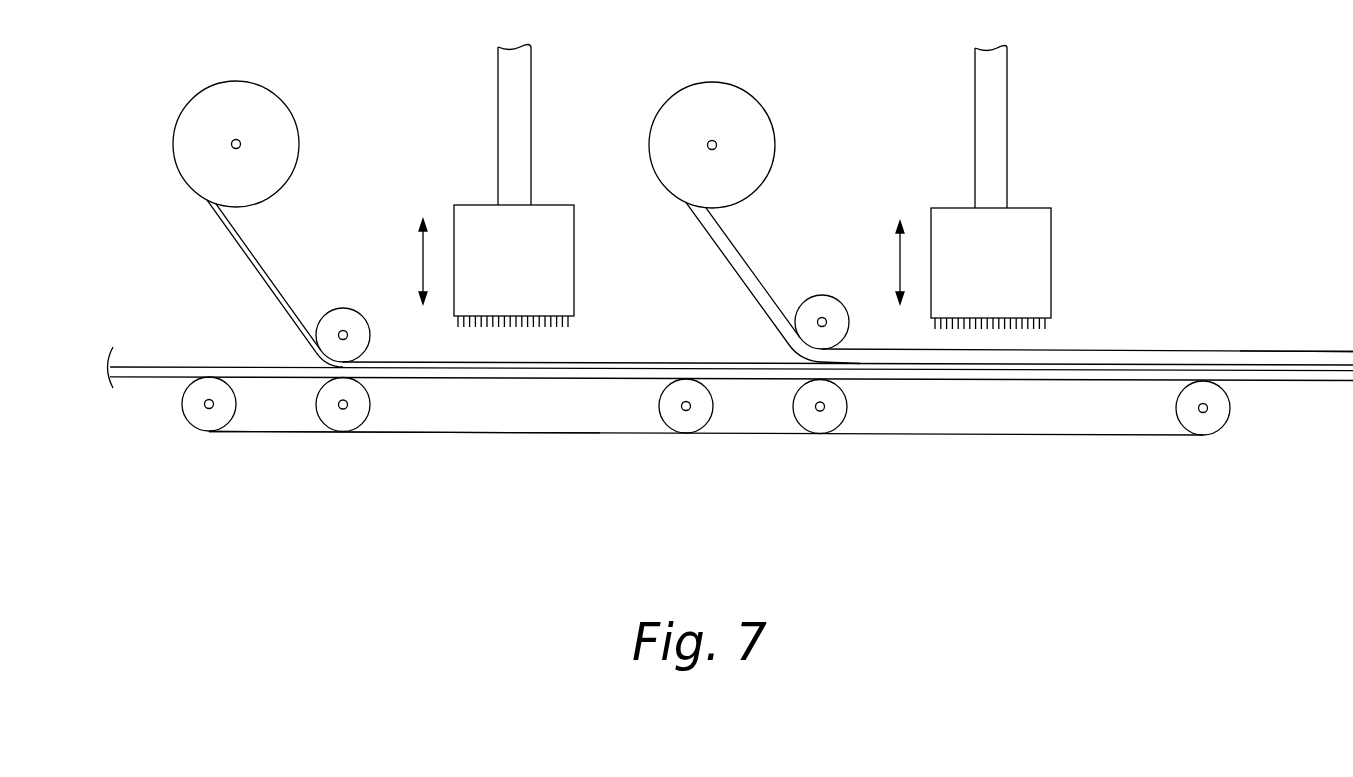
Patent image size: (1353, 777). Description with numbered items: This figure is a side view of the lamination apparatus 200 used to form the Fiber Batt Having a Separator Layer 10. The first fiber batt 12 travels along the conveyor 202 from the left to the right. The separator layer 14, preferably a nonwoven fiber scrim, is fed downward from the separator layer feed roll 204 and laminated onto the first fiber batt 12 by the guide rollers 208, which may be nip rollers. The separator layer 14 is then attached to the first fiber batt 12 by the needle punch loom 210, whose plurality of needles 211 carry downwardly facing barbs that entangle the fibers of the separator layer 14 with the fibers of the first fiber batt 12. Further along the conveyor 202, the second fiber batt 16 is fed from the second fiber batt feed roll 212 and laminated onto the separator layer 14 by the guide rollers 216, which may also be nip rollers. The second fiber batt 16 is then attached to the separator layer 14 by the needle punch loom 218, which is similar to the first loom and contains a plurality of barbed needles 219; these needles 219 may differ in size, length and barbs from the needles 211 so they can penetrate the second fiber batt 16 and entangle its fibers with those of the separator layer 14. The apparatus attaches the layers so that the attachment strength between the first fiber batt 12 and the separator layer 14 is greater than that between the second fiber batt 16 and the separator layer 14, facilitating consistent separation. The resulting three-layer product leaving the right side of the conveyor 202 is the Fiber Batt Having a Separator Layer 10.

The Fiber Batt Having a Separator Layer 10 is at (1290, 328).
The first fiber batt 12 is at (150, 363).
The separator layer 14 is at (238, 243).
The second fiber batt 16 is at (713, 250).
The lamination apparatus 200 is at (1022, 558).
The conveyor 202 is at (526, 437).
The separator layer feed roll 204 is at (300, 143).
The guide rollers 208 is at (345, 306).
The needle punch loom 210 is at (470, 203).
The needles 211 is at (586, 328).
The second fiber batt feed roll 212 is at (777, 143).
The guide rollers 216 is at (823, 294).
The needle punch loom 218 is at (943, 207).
The needles 219 is at (1063, 329).